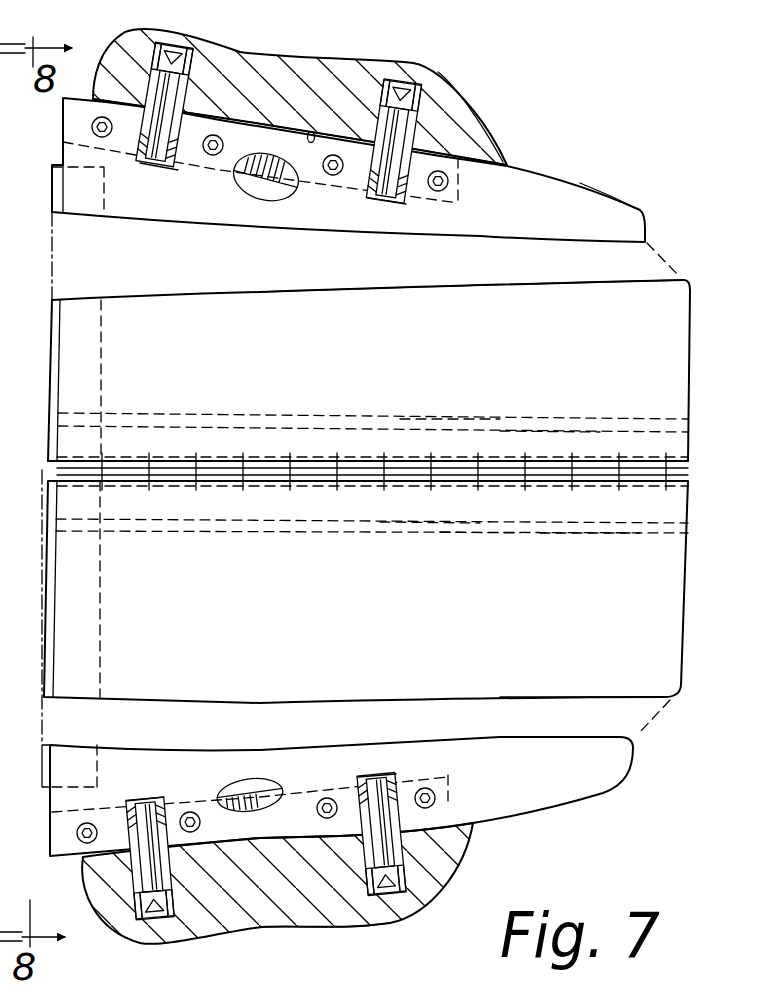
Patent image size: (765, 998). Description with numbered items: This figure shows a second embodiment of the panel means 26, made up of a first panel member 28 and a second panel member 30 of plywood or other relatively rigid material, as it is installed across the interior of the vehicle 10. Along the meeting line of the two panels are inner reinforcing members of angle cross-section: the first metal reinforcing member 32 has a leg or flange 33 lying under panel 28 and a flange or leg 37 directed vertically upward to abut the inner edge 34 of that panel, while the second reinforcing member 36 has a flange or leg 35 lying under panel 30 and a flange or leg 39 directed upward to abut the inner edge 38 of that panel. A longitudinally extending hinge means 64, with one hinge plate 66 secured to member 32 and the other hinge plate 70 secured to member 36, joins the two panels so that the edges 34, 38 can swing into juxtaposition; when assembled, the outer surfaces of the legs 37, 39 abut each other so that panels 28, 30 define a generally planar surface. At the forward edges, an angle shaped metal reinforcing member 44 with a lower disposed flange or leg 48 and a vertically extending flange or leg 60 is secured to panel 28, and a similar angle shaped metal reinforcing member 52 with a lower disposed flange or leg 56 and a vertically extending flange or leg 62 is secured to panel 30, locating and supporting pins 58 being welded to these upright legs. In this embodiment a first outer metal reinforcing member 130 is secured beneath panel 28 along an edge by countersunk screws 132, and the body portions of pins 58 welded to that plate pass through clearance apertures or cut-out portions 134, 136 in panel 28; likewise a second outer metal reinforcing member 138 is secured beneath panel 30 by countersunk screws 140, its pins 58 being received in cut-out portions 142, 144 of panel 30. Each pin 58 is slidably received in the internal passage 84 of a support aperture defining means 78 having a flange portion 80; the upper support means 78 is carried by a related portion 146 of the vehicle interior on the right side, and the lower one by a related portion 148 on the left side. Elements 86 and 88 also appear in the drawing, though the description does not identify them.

The vehicle 10 is at (508, 126).
The panel means 26 is at (590, 196).
The first panel member 28 is at (611, 302).
The second panel member 30 is at (623, 670).
The first metal reinforcing member 32 is at (455, 420).
The leg or flange 33 is at (531, 427).
The inner edge 34 is at (211, 458).
The flange or leg 35 is at (430, 524).
The second reinforcing member 36 is at (463, 528).
The flange or leg 37 is at (583, 470).
The inner edge 38 is at (282, 473).
The flange or leg 39 is at (366, 470).
The angle shaped metal reinforcing member 44 is at (48, 372).
The lower disposed flange or leg 48 is at (104, 336).
The angle shaped metal reinforcing member 52 is at (43, 635).
The lower disposed flange or leg 56 is at (101, 582).
The locating and supporting pins 58 is at (172, 145).
The vertically extending flange or leg 60 is at (60, 303).
The vertically extending flange or leg 62 is at (48, 603).
The hinge means 64 is at (582, 534).
The hinge plate 66 is at (273, 412).
The hinge plate 70 is at (297, 532).
The support aperture defining means 78 is at (146, 72).
The flange portion 80 is at (244, 86).
The internal passage 84 is at (172, 47).
The plate edge 86 is at (288, 131).
The plate edge 88 is at (304, 848).
The first outer metal reinforcing member 130 is at (266, 182).
The screws 132 is at (92, 127).
The clearance aperture or cut-out portion 134 is at (146, 162).
The clearance aperture or cut-out portion 136 is at (380, 202).
The second outer metal reinforcing member 138 is at (249, 790).
The screws 140 is at (77, 834).
The clearance aperture or cut-out portion 142 is at (134, 812).
The clearance aperture or cut-out portion 144 is at (369, 795).
The related portion of the interior of the vehicle 146 is at (311, 131).
The related portion of the interior of the vehicle 148 is at (274, 843).